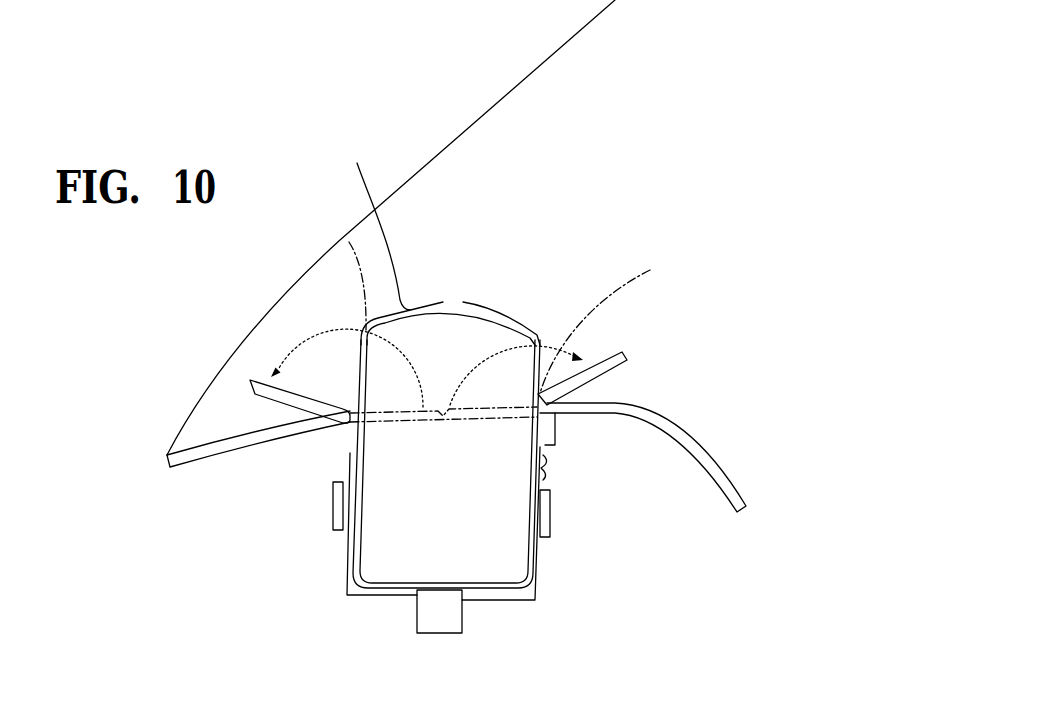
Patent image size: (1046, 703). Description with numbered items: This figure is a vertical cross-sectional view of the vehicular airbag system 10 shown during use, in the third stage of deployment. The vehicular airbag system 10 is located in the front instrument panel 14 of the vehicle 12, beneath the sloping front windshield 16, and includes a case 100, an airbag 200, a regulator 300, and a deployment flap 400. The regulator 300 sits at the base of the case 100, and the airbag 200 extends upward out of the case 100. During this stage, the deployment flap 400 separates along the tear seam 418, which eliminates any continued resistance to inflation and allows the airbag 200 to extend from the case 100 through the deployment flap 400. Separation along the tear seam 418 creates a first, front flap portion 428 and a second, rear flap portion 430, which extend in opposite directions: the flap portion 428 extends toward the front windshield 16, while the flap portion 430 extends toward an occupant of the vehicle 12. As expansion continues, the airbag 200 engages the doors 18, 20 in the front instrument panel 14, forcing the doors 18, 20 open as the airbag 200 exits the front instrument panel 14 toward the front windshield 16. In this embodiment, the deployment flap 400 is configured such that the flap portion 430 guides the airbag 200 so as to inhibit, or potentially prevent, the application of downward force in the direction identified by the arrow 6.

The arrow 6 is at (690, 279).
The vehicular airbag system 10 is at (506, 236).
The vehicle 12 is at (387, 63).
The front instrument panel 14 is at (249, 467).
The front windshield 16 is at (508, 92).
The door 18 is at (285, 395).
The door 20 is at (582, 380).
The case 100 is at (546, 583).
The airbag 200 is at (532, 551).
The regulator 300 is at (471, 620).
The deployment flap 400 is at (430, 244).
The tear seam 418 is at (465, 284).
The first flap portion 428 is at (362, 273).
The second flap portion 430 is at (507, 316).